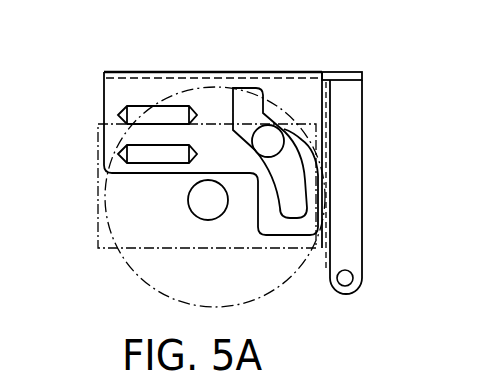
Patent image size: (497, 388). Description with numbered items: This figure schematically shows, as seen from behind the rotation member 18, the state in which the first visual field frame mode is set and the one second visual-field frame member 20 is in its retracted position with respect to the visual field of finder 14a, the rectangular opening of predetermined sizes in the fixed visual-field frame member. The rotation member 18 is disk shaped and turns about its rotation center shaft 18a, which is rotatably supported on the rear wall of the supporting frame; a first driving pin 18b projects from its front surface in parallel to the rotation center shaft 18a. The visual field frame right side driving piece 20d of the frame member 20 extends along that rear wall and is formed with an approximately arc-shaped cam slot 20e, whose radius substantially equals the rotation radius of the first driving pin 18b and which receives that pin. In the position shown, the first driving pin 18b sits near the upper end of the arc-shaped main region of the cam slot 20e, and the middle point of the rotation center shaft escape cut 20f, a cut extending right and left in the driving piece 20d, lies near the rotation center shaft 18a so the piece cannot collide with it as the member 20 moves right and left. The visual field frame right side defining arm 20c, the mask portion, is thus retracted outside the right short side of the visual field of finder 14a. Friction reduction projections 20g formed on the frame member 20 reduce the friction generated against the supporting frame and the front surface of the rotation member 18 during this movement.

The one second visual-field frame member 20 is at (162, 66).
The visual field frame right side defining arm 20c is at (353, 229).
The visual field frame right side driving piece 20d is at (245, 165).
The cam slot 20e is at (320, 168).
The rotation center shaft escape cut 20f is at (115, 173).
The friction reduction projections 20g is at (118, 153).
The rotation member 18 is at (254, 307).
The rotation center shaft 18a is at (198, 202).
The first driving pin 18b is at (272, 138).
The visual field of finder 14a is at (93, 221).